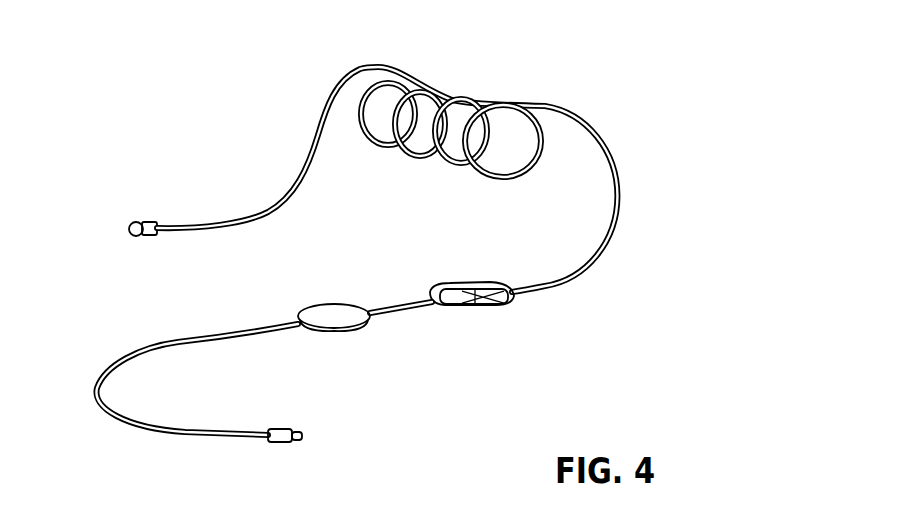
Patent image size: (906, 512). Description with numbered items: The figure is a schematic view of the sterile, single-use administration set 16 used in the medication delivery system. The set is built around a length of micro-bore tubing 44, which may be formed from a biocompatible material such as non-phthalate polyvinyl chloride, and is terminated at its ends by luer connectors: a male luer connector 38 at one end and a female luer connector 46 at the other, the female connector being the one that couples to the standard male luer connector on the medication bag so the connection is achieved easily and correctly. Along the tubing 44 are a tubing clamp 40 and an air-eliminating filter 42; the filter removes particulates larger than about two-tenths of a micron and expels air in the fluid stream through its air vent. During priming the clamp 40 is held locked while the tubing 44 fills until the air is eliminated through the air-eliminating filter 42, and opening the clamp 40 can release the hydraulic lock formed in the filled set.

The administration set 16 is at (433, 284).
The male luer connector 38 is at (130, 222).
The tubing clamp 40 is at (475, 305).
The air-eliminating filter 42 is at (338, 317).
The tubing 44 is at (442, 163).
The female luer connector 46 is at (285, 442).